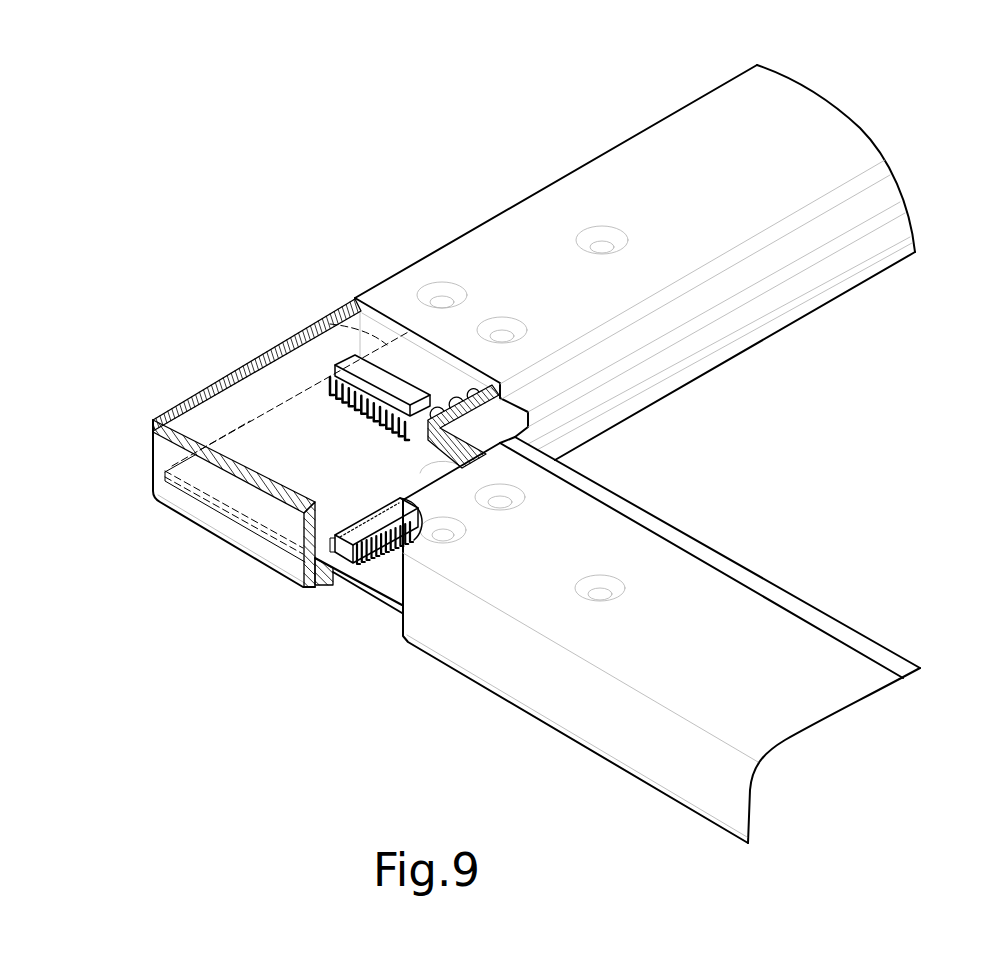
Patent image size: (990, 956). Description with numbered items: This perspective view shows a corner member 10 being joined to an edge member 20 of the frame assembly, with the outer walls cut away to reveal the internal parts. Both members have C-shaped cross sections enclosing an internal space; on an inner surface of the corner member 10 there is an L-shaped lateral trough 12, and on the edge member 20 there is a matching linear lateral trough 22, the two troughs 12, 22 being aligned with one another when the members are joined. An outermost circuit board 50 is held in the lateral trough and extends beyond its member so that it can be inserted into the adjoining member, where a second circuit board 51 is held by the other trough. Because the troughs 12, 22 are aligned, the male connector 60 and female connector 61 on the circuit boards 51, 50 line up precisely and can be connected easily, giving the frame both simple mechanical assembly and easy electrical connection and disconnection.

The corner member 10 is at (191, 506).
The lateral trough 12 is at (301, 565).
The edge member 20 is at (590, 738).
The lateral trough 22 is at (329, 324).
The circuit board 50 is at (393, 610).
The circuit board 51 is at (268, 430).
The male connector 60 is at (345, 568).
The female connector 61 is at (319, 578).